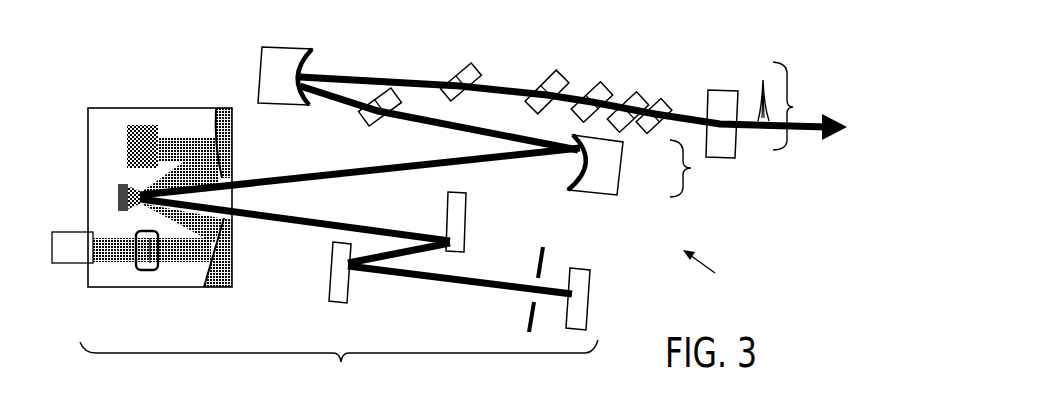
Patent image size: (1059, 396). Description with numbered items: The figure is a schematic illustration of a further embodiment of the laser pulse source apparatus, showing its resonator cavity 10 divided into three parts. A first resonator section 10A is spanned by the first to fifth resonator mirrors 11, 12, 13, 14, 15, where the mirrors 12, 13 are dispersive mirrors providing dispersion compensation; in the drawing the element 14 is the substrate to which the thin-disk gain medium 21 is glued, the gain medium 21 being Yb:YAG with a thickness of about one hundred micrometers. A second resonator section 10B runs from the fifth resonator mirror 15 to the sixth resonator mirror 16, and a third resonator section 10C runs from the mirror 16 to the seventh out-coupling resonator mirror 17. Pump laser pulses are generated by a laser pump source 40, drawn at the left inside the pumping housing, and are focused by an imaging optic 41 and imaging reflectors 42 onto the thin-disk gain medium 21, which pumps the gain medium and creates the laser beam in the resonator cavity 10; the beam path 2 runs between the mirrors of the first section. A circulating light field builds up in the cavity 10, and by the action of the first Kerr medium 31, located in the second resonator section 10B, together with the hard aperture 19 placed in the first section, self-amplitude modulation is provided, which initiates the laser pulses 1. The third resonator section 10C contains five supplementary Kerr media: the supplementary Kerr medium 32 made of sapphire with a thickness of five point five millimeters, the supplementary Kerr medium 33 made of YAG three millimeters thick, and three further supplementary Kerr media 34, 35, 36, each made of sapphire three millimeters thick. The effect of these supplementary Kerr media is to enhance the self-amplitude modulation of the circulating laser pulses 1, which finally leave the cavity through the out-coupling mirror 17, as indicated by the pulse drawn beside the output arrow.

The laser pulses 1 is at (759, 122).
The laser beam path 2 is at (450, 283).
The resonator cavity 10 is at (746, 293).
The first resonator section 10A is at (357, 393).
The second resonator section 10B is at (733, 206).
The third resonator section 10C is at (835, 116).
The first resonator mirror 11 is at (583, 297).
The second resonator mirror 12 is at (333, 272).
The third resonator mirror 13 is at (453, 223).
The substrate 14 is at (118, 193).
The fifth resonator mirror 15 is at (605, 182).
The sixth resonator mirror 16 is at (268, 61).
The seventh out-coupling resonator mirror 17 is at (718, 105).
The hard aperture 19 is at (544, 258).
The thin-disk gain medium 21 is at (134, 189).
The first Kerr medium 31 is at (363, 120).
The supplementary Kerr medium 32 is at (465, 78).
The supplementary Kerr medium 33 is at (553, 87).
The supplementary Kerr medium 34 is at (602, 92).
The supplementary Kerr medium 35 is at (638, 92).
The supplementary Kerr medium 36 is at (659, 108).
The laser pump source 40 is at (84, 260).
The imaging optic 41 is at (148, 264).
The imaging reflectors 42 is at (134, 127).